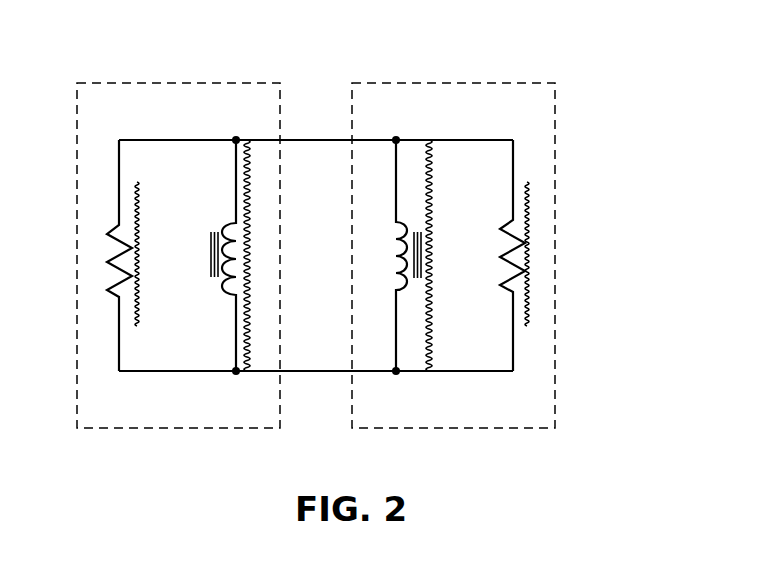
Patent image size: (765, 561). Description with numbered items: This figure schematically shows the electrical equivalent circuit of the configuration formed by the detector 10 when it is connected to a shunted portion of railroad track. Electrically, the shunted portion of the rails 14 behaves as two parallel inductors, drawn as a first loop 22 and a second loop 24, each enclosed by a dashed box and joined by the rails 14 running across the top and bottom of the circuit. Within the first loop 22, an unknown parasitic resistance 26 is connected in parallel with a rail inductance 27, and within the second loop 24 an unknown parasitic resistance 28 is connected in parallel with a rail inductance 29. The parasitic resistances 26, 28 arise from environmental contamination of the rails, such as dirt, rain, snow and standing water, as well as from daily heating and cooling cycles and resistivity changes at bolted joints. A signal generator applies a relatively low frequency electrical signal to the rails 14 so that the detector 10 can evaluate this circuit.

The detector 10 is at (556, 44).
The rails 14 is at (368, 140).
The first loop 22 is at (135, 430).
The second loop 24 is at (500, 430).
The parasitic resistance 26 is at (107, 234).
The rail inductance 27 is at (233, 236).
The parasitic resistance 28 is at (513, 242).
The rail inductance 29 is at (400, 267).